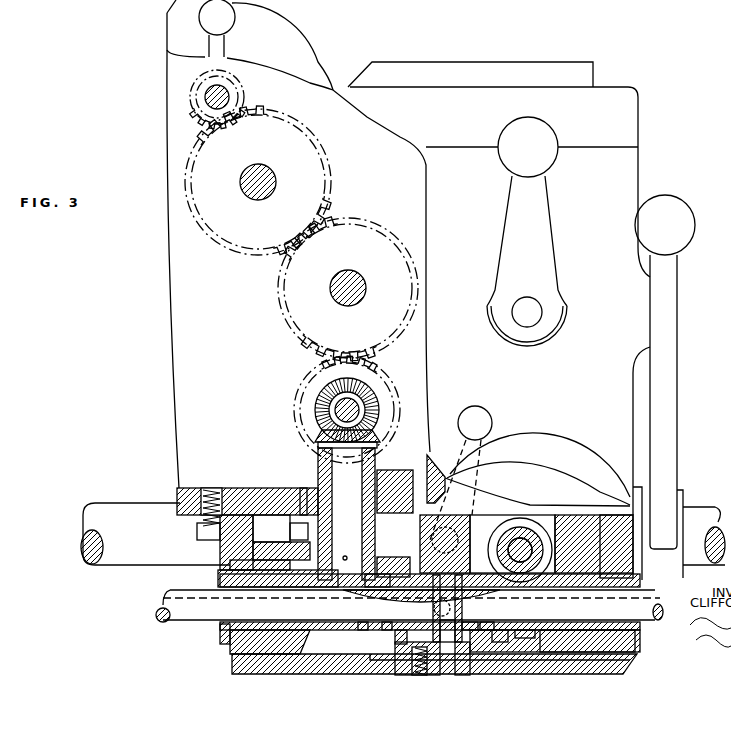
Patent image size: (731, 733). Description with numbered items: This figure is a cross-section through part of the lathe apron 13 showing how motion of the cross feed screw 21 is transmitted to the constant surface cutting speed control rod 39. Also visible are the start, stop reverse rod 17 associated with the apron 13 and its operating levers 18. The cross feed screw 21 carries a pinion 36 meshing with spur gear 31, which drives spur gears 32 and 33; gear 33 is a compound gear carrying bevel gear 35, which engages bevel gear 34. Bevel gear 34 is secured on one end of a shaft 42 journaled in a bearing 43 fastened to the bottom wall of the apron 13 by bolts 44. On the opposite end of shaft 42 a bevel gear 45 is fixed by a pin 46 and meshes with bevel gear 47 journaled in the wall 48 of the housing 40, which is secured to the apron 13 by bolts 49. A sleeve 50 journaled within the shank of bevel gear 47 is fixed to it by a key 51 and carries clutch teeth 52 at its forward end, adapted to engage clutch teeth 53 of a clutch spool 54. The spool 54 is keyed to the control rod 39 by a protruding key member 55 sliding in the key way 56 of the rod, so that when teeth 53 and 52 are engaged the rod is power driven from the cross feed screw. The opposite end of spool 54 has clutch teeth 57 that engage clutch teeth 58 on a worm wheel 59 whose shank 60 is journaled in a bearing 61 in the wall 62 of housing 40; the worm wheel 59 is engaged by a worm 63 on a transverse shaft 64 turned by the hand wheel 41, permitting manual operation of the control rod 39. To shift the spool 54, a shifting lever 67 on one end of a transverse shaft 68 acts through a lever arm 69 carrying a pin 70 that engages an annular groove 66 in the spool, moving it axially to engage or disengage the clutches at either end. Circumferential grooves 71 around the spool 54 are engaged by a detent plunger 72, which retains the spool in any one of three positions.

The apron 13 is at (262, 492).
The start, stop reverse rod 17 is at (707, 507).
The operating levers 18 is at (673, 320).
The cross feed screw 21 is at (224, 94).
The spur gear 31 is at (221, 231).
The spur gear 32 is at (290, 308).
The spur gear 33 is at (307, 400).
The bevel gear 34 is at (320, 443).
The bevel gear 35 is at (364, 403).
The pinion 36 is at (242, 100).
The control rod 39 is at (157, 614).
The housing 40 is at (631, 668).
The hand wheel 41 is at (537, 432).
The shaft 42 is at (374, 476).
The bearing 43 is at (320, 472).
The bolts 44 is at (300, 540).
The bevel gear 45 is at (380, 563).
The pin 46 is at (345, 560).
The bevel gear 47 is at (309, 643).
The wall 48 is at (231, 562).
The bolts 49 is at (198, 533).
The sleeve 50 is at (218, 585).
The key 51 is at (220, 640).
The clutch teeth 52 is at (363, 632).
The clutch teeth 53 is at (386, 633).
The clutch spool 54 is at (470, 628).
The key member 55 is at (362, 600).
The key way 56 is at (170, 598).
The clutch teeth 57 is at (490, 620).
The clutch teeth 58 is at (500, 630).
The worm wheel 59 is at (523, 632).
The shank 60 is at (578, 630).
The bearing 61 is at (638, 643).
The wall 62 is at (633, 560).
The worm 63 is at (503, 532).
The shaft 64 is at (508, 549).
The annular groove 66 is at (443, 645).
The shifting lever 67 is at (475, 406).
The shaft 68 is at (447, 528).
The lever arm 69 is at (378, 594).
The pin 70 is at (434, 612).
The circumferential grooves 71 is at (398, 642).
The detent plunger 72 is at (415, 665).